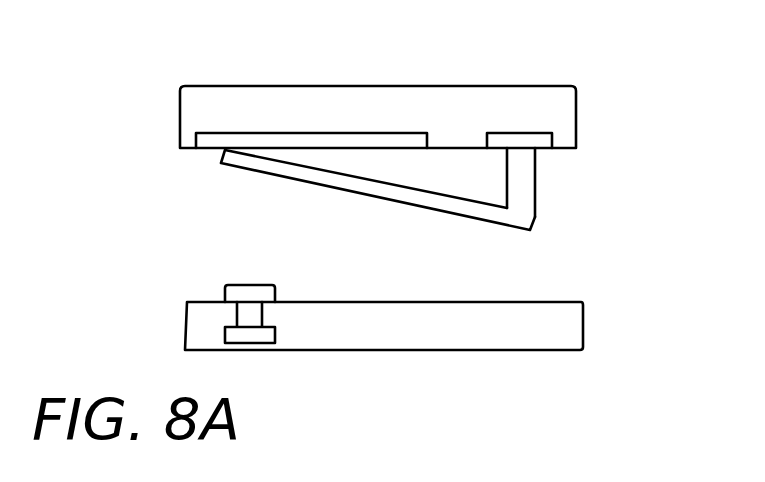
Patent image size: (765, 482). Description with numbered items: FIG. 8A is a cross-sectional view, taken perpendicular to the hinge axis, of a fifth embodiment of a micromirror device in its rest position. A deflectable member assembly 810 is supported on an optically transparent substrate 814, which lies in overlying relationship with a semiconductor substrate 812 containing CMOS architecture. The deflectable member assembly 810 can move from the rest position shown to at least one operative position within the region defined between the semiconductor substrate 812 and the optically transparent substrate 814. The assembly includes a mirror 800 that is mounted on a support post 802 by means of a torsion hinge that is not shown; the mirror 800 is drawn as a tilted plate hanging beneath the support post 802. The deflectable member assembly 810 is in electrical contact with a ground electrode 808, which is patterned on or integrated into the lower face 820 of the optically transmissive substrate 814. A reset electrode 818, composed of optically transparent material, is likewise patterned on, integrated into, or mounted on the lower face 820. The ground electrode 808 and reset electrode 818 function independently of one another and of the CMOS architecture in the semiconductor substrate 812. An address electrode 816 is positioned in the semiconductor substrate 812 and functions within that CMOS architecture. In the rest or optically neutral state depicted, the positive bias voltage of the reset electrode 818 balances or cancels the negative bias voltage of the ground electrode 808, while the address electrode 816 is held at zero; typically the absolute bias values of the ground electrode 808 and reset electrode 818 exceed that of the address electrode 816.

The mirror 800 is at (393, 203).
The support post 802 is at (536, 180).
The ground electrode 808 is at (524, 132).
The deflectable member assembly 810 is at (600, 230).
The semiconductor substrate 812 is at (580, 327).
The optically transparent substrate 814 is at (186, 118).
The address electrode 816 is at (227, 288).
The reset electrode 818 is at (253, 136).
The lower face 820 is at (433, 148).